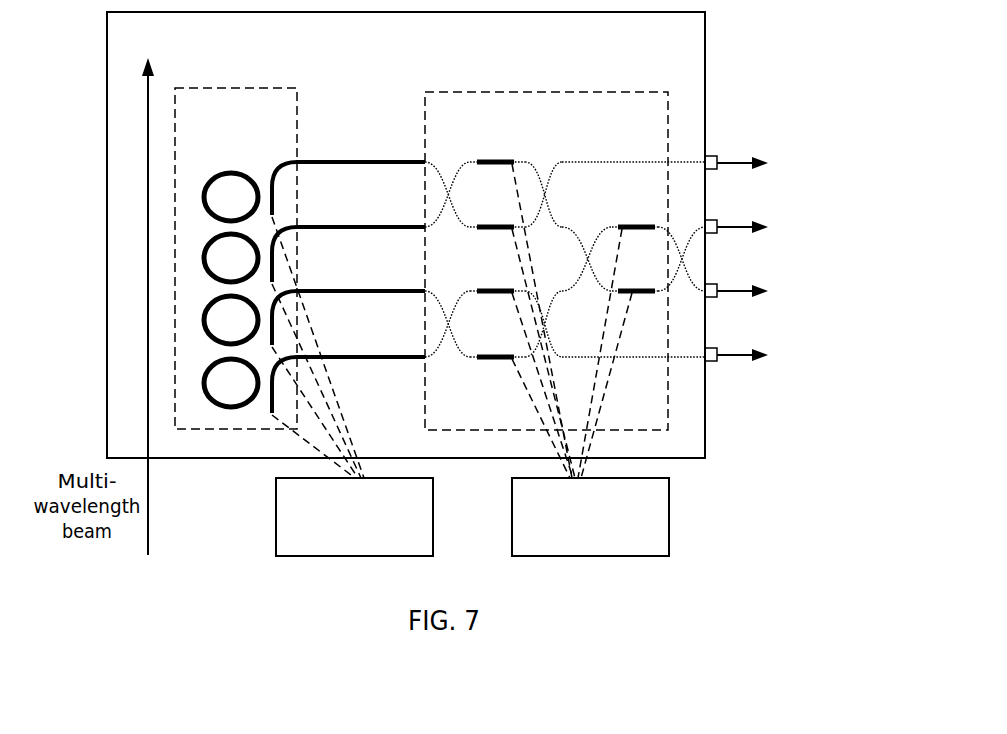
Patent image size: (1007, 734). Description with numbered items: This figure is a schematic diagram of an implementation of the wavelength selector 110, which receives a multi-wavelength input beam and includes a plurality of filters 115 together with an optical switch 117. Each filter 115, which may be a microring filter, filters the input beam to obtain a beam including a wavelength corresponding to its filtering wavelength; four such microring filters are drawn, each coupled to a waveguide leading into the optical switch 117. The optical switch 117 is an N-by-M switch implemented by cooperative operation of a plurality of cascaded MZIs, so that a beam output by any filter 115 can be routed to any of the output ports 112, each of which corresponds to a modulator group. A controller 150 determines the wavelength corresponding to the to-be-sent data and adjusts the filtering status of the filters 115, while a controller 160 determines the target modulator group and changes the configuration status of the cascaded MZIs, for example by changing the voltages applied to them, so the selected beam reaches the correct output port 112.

The wavelength selector 110 is at (406, 235).
The output port 112 is at (784, 258).
The filter 115 is at (300, 283).
The optical switch 117 is at (565, 285).
The controller 150 is at (354, 517).
The controller 160 is at (590, 517).